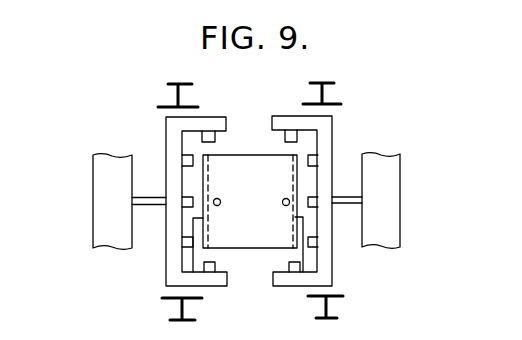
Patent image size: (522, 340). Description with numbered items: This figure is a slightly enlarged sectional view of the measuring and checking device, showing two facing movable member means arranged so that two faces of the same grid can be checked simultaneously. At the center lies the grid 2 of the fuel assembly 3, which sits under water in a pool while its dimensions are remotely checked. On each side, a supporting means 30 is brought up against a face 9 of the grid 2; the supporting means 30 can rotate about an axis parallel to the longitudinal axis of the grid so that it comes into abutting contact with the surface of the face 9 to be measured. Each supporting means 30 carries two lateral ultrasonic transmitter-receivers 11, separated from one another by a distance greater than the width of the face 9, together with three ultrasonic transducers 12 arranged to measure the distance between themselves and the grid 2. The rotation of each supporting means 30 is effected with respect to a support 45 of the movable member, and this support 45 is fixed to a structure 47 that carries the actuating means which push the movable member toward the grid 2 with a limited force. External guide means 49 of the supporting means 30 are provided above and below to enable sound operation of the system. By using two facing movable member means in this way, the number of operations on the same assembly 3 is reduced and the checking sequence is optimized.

The grid 2 is at (204, 183).
The assembly 3 is at (253, 227).
The face 9 is at (193, 218).
The ultrasonic transmitter-receivers 11 is at (292, 134).
The ultrasonic transducers 12 is at (313, 240).
The supporting means 30 is at (173, 136).
The support 45 is at (153, 205).
The structure 47 is at (112, 173).
The external guide means 49 is at (177, 95).